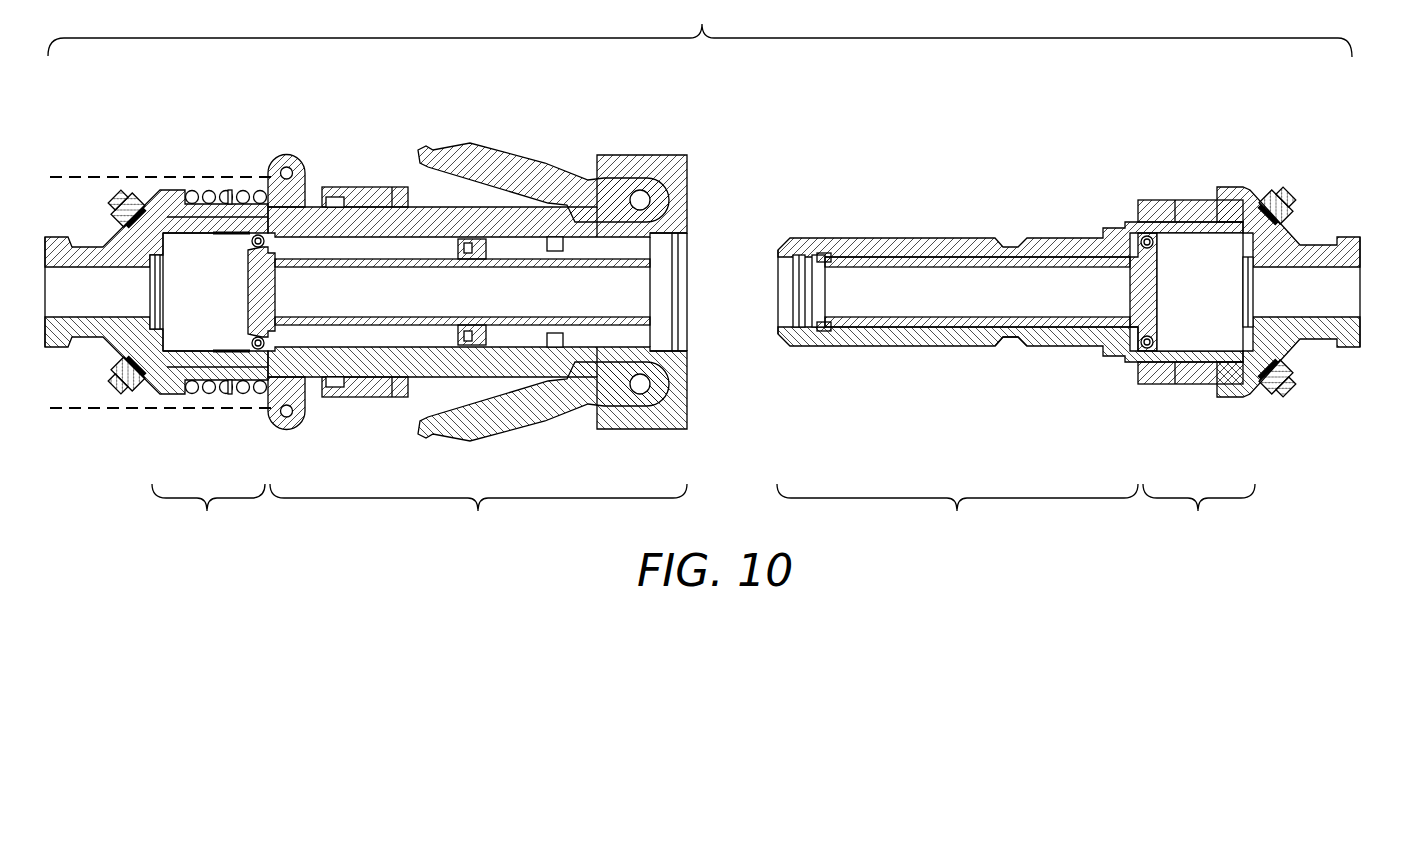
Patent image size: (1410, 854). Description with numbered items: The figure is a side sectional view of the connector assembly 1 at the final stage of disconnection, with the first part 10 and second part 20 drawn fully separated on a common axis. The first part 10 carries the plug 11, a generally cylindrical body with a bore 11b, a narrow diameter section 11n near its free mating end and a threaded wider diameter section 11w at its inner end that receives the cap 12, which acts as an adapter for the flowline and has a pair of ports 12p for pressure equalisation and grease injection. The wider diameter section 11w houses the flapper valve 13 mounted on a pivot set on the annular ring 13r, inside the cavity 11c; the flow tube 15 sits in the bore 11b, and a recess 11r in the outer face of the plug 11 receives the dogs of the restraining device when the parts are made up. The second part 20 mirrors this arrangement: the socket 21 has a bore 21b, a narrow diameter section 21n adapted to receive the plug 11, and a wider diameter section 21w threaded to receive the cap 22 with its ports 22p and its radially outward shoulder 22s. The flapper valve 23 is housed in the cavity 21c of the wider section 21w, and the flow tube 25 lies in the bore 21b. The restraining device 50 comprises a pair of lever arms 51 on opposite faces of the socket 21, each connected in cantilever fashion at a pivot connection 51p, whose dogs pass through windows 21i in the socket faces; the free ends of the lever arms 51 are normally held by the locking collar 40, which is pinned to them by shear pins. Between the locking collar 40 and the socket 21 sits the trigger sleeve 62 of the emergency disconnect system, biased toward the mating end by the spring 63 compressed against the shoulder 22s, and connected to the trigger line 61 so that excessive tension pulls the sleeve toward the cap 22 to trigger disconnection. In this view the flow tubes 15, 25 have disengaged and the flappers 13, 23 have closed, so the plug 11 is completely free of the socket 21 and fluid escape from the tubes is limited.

The connector assembly 1 is at (700, 28).
The first part 10 is at (1058, 145).
The plug 11 is at (883, 225).
The bore 11b is at (765, 298).
The cavity 11c is at (1200, 330).
The narrow diameter section 11n is at (957, 514).
The recess 11r is at (1020, 348).
The wider diameter section 11w is at (1193, 222).
The cap 12 is at (1232, 395).
The ports 12p is at (1305, 207).
The flapper valve 13 is at (1150, 285).
The annular ring 13r is at (1135, 345).
The flow tube 15 is at (972, 273).
The second part 20 is at (632, 113).
The socket 21 is at (700, 246).
The bore 21b is at (700, 346).
The cavity 21c is at (207, 250).
The windows 21i is at (573, 236).
The narrow diameter section 21n is at (478, 514).
The wider diameter section 21w is at (208, 514).
The cap 22 is at (170, 392).
The ports 22p is at (157, 190).
The shoulder 22s is at (192, 393).
The flapper valve 23 is at (252, 290).
The flow tube 25 is at (372, 306).
The locking collar 40 is at (350, 188).
The restraining device 50 is at (530, 106).
The lever arms 51 is at (487, 152).
The pivot connection 51p is at (640, 197).
The trigger line 61 is at (96, 177).
The trigger sleeve 62 is at (287, 153).
The spring 63 is at (250, 393).